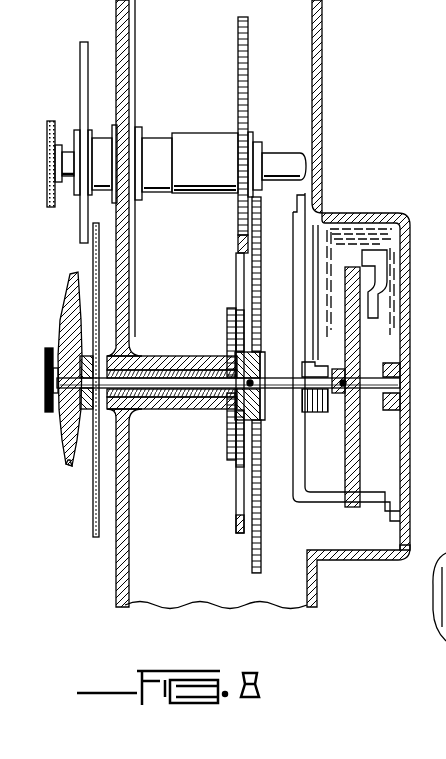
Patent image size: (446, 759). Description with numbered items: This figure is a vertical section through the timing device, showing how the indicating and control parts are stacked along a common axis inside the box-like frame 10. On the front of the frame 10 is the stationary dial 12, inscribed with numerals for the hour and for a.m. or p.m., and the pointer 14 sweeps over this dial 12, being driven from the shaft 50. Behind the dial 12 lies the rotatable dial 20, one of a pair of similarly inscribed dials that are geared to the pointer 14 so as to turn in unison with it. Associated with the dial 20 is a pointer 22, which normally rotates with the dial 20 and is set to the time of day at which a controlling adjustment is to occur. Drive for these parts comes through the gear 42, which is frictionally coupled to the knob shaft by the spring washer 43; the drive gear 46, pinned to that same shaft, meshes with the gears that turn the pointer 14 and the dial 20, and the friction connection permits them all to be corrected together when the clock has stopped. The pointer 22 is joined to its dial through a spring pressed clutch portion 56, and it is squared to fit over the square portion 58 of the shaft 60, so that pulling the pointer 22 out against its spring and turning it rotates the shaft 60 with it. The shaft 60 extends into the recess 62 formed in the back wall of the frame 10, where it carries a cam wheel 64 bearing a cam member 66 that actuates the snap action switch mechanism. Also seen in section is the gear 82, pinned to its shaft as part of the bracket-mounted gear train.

The frame 10 is at (319, 72).
The dial 12 is at (85, 42).
The pointer 14 is at (55, 109).
The dial 20 is at (93, 258).
The pointer 22 is at (63, 330).
The gear 42 is at (259, 538).
The spring washer 43 is at (264, 362).
The drive gear 46 is at (228, 336).
The shaft 50 is at (283, 165).
The spring pressed clutch portion 56 is at (74, 462).
The square portion 58 is at (62, 416).
The shaft 60 is at (174, 392).
The recess 62 is at (392, 563).
The cam wheel 64 is at (358, 368).
The cam member 66 is at (375, 258).
The gear 82 is at (247, 37).